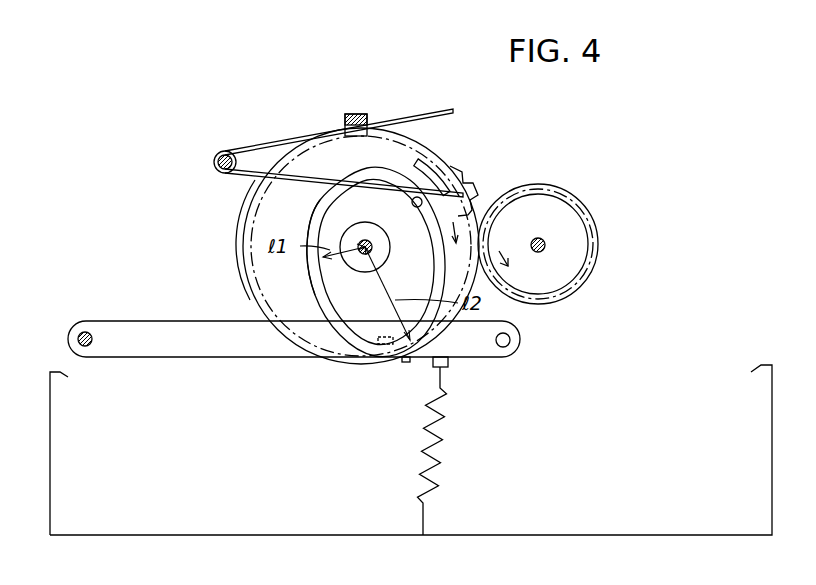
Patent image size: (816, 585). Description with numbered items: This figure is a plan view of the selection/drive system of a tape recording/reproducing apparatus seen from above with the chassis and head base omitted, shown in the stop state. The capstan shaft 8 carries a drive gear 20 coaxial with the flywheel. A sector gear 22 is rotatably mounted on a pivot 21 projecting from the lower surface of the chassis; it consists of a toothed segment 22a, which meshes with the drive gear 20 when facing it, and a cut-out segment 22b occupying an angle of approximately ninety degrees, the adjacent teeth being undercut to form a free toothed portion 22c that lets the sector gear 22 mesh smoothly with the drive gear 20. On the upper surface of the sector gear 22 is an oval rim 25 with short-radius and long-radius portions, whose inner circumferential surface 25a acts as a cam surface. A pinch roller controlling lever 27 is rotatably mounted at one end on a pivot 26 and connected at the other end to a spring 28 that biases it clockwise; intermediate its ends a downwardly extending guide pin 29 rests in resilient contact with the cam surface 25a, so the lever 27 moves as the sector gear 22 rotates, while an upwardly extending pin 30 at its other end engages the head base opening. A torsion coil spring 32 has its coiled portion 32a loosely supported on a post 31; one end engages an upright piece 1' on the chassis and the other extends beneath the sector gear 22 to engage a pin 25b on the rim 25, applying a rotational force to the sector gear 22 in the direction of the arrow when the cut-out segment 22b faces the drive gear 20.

The upright piece 1' is at (411, 322).
The capstan shaft 8 is at (546, 240).
The drive gear 20 is at (570, 260).
The pivot 21 is at (345, 240).
The sector gear 22 is at (403, 150).
The toothed segment 22a is at (248, 198).
The cut-out segment 22b is at (463, 252).
The free toothed portion 22c is at (470, 186).
The oval rim 25 is at (372, 176).
The inner circumferential surface 25a is at (318, 273).
The pin 25b is at (421, 197).
The pivot 26 is at (86, 350).
The pinch roller controlling lever 27 is at (157, 350).
The spring 28 is at (436, 444).
The guide pin 29 is at (386, 346).
The pin 30 is at (506, 348).
The post 31 is at (212, 154).
The torsion coil spring 32 is at (287, 137).
The coiled portion 32a is at (229, 150).